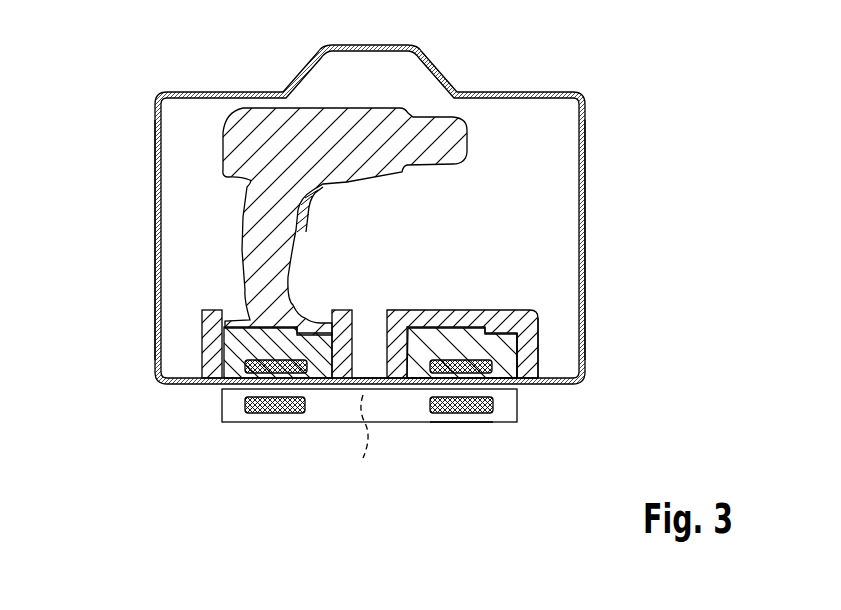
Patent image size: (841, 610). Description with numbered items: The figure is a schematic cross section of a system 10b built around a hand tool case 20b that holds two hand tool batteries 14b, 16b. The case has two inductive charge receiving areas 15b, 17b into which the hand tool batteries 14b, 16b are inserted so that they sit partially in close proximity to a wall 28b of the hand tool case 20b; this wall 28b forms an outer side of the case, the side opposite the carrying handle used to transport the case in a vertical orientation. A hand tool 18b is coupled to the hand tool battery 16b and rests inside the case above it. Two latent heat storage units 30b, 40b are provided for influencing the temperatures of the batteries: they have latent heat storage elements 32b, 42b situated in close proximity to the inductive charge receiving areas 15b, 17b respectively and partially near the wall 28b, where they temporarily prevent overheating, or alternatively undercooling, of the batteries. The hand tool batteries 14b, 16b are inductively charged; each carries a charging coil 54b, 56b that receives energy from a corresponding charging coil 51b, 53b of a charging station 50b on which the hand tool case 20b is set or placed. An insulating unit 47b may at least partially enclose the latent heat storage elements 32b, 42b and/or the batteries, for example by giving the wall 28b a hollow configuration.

The system 10b is at (121, 53).
The hand tool case 20b is at (611, 118).
The hand tool 18b is at (265, 183).
The hand tool battery 16b is at (263, 340).
The hand tool battery 14b is at (457, 345).
The inductive charge receiving area 15b is at (532, 345).
The wall 28b is at (376, 368).
The latent heat storage unit 30b is at (600, 351).
The latent heat storage element 32b is at (543, 370).
The latent heat storage unit 40b is at (140, 362).
The latent heat storage element 42b is at (210, 350).
The inductive charge receiving area 17b is at (224, 394).
The insulating unit 47b is at (356, 442).
The charging station 50b is at (457, 417).
The charging coil 51b is at (477, 412).
The charging coil 53b is at (260, 410).
The charging coil 54b is at (490, 372).
The charging coil 56b is at (297, 373).